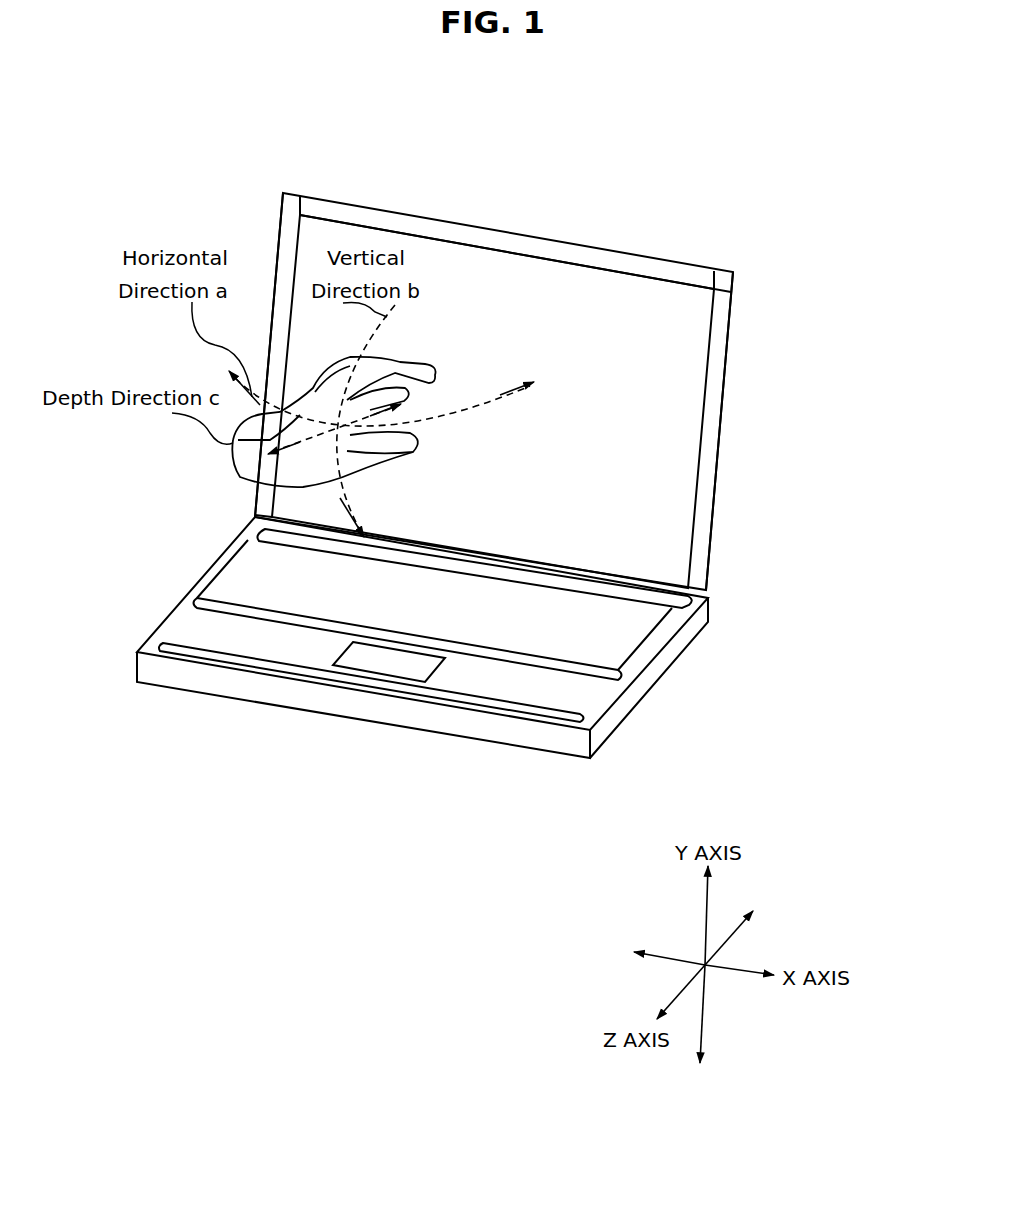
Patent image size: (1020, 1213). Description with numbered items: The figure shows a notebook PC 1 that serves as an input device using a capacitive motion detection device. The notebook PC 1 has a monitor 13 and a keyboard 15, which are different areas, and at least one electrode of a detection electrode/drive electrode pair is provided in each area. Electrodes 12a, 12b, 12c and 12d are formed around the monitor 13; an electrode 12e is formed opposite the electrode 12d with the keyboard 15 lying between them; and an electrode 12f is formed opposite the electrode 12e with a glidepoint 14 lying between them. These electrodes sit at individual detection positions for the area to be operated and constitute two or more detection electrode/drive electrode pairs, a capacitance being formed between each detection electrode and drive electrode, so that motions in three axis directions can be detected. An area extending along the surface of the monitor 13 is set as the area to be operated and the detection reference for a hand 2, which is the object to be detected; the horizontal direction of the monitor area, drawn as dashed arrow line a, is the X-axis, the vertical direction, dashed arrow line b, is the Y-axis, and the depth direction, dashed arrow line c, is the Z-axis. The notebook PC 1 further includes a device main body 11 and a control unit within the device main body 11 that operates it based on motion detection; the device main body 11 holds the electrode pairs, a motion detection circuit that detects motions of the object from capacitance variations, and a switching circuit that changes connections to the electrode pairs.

The notebook PC 1 is at (478, 482).
The hand 2 is at (240, 468).
The device main body 11 is at (640, 688).
The electrode 12a is at (462, 237).
The electrode 12b is at (280, 240).
The electrode 12c is at (712, 434).
The electrode 12d is at (630, 583).
The electrode 12e is at (567, 673).
The electrode 12f is at (452, 692).
The monitor 13 is at (602, 306).
The glidepoint 14 is at (373, 662).
The keyboard 15 is at (238, 577).